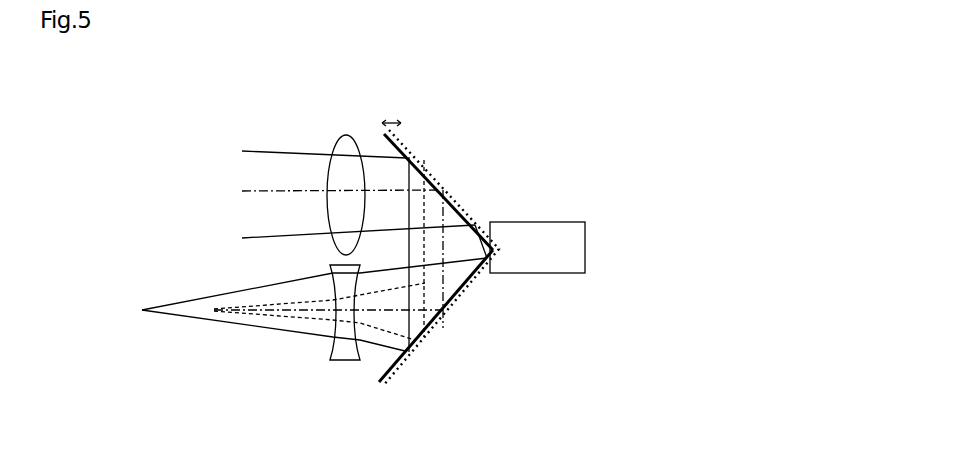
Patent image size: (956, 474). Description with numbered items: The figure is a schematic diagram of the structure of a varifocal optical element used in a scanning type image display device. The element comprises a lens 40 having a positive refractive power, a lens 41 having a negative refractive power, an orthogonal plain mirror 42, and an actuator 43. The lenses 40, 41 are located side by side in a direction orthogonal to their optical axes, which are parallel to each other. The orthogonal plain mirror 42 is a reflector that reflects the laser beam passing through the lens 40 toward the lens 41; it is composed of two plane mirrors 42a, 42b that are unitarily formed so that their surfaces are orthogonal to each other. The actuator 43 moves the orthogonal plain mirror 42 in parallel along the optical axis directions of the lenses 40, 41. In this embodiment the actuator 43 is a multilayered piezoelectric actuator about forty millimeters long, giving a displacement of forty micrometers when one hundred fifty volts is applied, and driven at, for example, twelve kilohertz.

The lens having a positive refractive power 40 is at (345, 141).
The lens having a negative refractive power 41 is at (343, 356).
The orthogonal plain mirror 42 is at (533, 235).
The plane mirror 42a is at (405, 139).
The plane mirror 42b is at (437, 323).
The actuator 43 is at (562, 238).